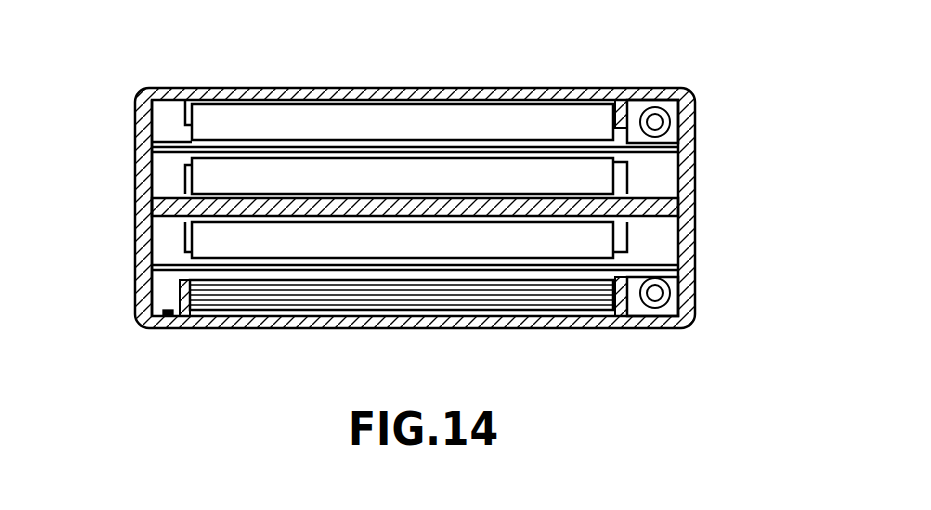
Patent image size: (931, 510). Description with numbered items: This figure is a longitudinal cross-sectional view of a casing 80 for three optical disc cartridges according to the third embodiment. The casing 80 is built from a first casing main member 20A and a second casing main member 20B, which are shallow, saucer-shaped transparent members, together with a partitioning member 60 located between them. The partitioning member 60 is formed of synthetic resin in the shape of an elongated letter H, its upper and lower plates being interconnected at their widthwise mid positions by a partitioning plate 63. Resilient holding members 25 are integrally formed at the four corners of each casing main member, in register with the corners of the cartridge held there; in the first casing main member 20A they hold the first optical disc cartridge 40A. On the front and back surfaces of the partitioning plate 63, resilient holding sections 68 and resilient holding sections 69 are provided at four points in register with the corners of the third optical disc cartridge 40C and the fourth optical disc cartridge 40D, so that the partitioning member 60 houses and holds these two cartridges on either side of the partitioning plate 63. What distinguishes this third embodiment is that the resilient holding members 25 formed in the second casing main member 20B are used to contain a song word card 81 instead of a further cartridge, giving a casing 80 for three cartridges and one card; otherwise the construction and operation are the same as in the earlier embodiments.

The casing 80 is at (702, 86).
The partitioning member 60 is at (150, 199).
The partitioning plate 63 is at (647, 205).
The first casing main member 20A is at (410, 112).
The second casing main member 20B is at (413, 209).
The first optical disc cartridge 40A is at (296, 117).
The third optical disc cartridge 40C is at (391, 173).
The fourth optical disc cartridge 40D is at (525, 240).
The resilient holding sections 68 is at (185, 170).
The resilient holding sections 69 is at (183, 237).
The song word card 81 is at (425, 296).
The resilient holding member 25 is at (190, 85).